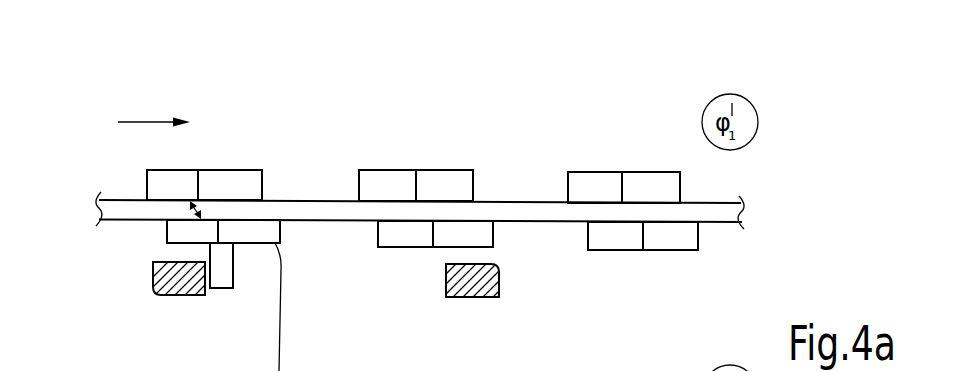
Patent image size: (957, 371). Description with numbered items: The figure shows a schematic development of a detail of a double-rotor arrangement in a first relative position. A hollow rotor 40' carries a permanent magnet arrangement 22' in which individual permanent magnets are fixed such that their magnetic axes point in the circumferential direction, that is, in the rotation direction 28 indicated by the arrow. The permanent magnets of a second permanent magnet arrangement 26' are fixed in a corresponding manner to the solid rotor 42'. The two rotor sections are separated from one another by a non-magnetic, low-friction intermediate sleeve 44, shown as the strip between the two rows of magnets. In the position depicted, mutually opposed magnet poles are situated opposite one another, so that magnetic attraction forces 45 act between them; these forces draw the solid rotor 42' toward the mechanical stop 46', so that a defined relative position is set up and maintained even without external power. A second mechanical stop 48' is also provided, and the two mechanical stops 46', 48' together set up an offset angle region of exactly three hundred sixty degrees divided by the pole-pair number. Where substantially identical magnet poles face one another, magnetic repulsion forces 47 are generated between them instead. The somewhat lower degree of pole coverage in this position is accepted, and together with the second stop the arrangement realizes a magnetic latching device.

The permanent magnet arrangement 22' is at (638, 118).
The hollow rotor 40' is at (485, 118).
The intermediate sleeve 44 is at (730, 213).
The solid rotor 42' is at (491, 283).
The permanent magnet arrangement 26' is at (687, 284).
The rotation direction 28 is at (133, 121).
The magnetic attraction forces 45 is at (194, 209).
The mechanical stop 46' is at (162, 293).
The mechanical stop 48' is at (498, 288).
The magnetic repulsion forces 47 is at (427, 307).